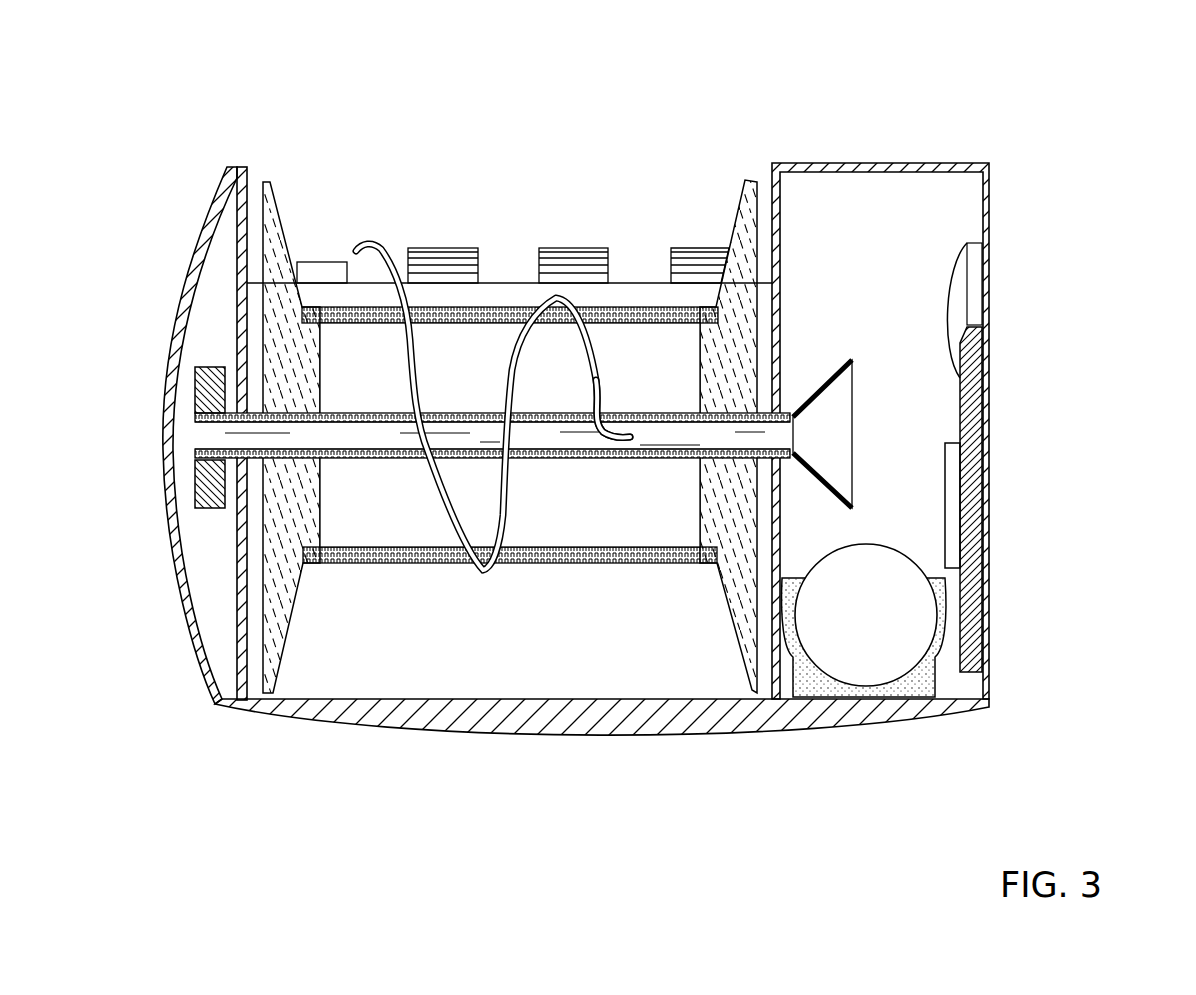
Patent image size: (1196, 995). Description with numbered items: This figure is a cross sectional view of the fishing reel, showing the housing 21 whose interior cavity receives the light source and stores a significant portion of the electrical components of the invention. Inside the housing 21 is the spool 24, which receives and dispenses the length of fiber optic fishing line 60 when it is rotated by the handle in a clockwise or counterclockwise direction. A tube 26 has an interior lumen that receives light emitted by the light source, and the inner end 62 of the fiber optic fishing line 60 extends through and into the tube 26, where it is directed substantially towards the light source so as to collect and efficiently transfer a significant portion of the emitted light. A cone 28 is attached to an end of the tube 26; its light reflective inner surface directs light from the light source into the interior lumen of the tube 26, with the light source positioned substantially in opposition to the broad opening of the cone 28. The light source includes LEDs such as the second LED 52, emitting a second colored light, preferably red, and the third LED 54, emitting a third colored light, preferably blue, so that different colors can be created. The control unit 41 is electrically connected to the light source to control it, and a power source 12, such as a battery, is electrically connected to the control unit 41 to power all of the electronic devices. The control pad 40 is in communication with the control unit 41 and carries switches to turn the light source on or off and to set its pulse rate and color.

The power source 12 is at (869, 630).
The housing 21 is at (648, 723).
The spool 24 is at (285, 233).
The tube 26 is at (561, 460).
The cone 28 is at (822, 390).
The control pad 40 is at (512, 230).
The control unit 41 is at (968, 525).
The second LED 52 is at (950, 477).
The third LED 54 is at (970, 282).
The fiber optic fishing line 60 is at (388, 250).
The inner end 62 is at (645, 433).